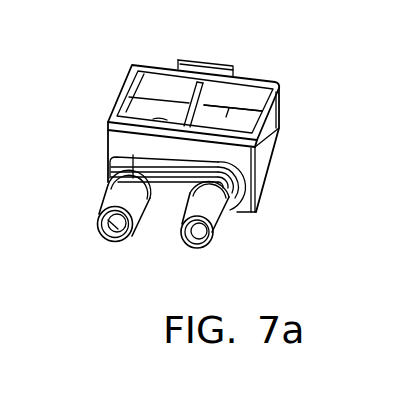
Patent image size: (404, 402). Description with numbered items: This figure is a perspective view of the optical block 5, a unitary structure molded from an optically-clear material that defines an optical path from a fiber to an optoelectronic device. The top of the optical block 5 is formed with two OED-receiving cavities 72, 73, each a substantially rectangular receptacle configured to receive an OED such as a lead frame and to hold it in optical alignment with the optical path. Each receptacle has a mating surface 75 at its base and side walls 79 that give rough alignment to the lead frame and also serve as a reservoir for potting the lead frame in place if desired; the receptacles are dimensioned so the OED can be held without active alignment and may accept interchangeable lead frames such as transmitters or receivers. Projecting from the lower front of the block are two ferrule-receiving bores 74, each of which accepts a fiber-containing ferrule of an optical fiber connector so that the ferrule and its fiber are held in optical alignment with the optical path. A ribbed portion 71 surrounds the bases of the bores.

The optical block 5 is at (280, 103).
The ribbed collar 71 is at (223, 218).
The OED-receiving cavity 72 is at (143, 103).
The OED-receiving cavity 73 is at (247, 117).
The ferrule-receiving bore 74 is at (105, 233).
The mating surface 75 is at (229, 108).
The side walls 79 is at (167, 85).